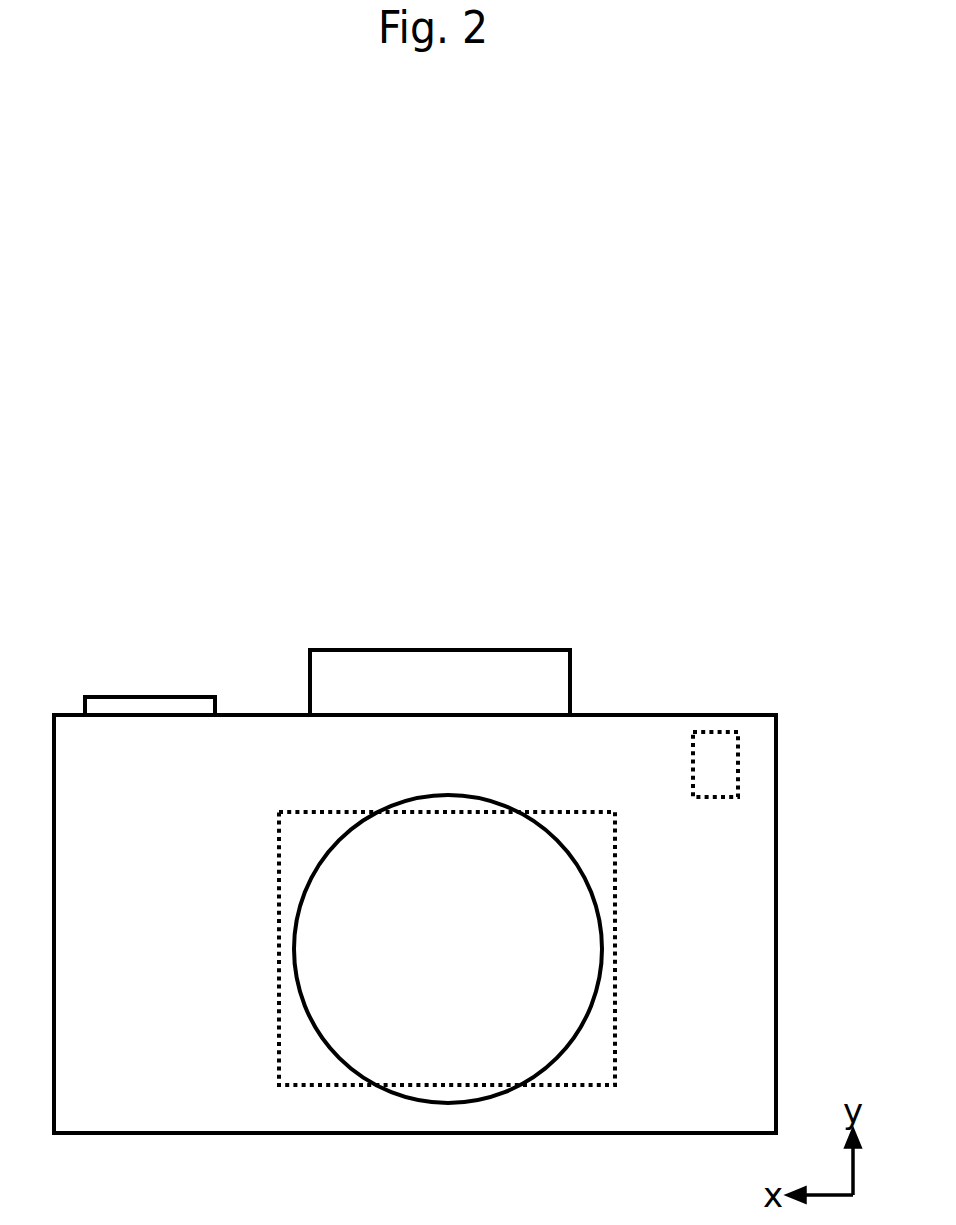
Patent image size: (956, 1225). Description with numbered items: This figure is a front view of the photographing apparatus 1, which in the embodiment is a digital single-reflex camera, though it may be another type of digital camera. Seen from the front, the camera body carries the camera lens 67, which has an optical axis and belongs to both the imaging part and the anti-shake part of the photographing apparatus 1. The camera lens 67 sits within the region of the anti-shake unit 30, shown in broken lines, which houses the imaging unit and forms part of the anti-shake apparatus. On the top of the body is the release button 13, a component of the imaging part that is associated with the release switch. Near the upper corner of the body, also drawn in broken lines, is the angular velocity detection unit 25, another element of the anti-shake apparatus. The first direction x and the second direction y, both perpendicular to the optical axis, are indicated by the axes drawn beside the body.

The photographing apparatus 1 is at (777, 713).
The release button 13 is at (133, 697).
The angular velocity detection unit 25 is at (727, 730).
The anti-shake unit 30 is at (278, 967).
The camera lens 67 is at (312, 875).